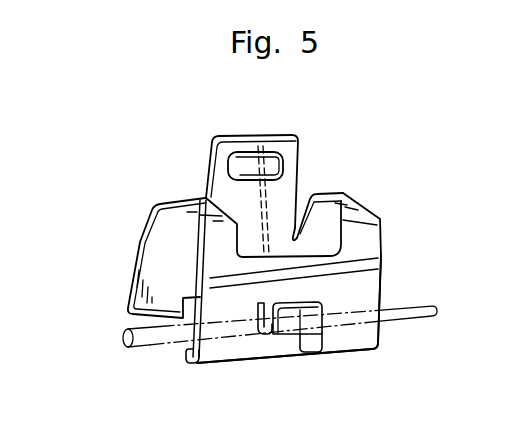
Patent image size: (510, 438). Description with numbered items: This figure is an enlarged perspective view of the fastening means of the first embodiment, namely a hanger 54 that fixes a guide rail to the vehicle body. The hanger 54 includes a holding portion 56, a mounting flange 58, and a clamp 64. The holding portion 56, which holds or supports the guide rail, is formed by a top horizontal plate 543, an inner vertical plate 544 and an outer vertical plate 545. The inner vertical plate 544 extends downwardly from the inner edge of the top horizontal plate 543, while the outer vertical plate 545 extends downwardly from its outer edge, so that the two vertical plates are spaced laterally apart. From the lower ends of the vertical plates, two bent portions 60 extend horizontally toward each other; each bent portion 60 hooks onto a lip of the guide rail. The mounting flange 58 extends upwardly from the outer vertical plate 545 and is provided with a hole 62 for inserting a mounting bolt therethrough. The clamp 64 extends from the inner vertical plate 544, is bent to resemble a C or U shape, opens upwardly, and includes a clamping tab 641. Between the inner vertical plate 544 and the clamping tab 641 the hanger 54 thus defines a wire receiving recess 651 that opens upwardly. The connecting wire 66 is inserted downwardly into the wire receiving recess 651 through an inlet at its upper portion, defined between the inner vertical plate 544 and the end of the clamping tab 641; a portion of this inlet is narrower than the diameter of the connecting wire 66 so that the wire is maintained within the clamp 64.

The hanger 54 is at (400, 236).
The holding portion 56 is at (380, 292).
The mounting flange 58 is at (290, 153).
The bent portions 60 is at (153, 338).
The hole 62 is at (259, 162).
The clamp 64 is at (279, 330).
The connecting wire 66 is at (408, 322).
The top horizontal plate 543 is at (343, 198).
The inner vertical plate 544 is at (353, 270).
The outer vertical plate 545 is at (157, 250).
The clamping tab 641 is at (299, 320).
The wire receiving recess 651 is at (257, 330).